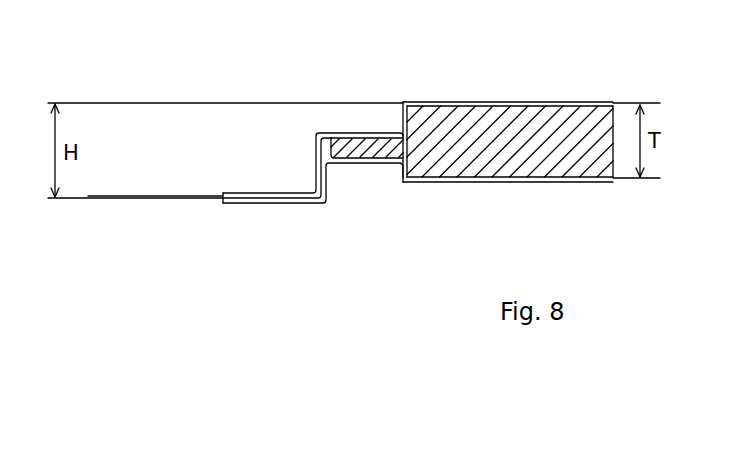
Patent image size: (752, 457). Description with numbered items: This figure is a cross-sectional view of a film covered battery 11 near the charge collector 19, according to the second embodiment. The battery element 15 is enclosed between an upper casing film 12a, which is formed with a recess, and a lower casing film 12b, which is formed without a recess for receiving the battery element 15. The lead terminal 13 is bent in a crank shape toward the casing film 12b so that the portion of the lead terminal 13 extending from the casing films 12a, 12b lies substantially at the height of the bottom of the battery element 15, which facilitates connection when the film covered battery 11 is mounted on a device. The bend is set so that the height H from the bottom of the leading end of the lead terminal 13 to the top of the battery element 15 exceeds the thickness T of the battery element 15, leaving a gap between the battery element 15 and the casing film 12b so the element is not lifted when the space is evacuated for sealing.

The film covered battery 11 is at (508, 136).
The casing film 12a is at (471, 103).
The casing film 12b is at (482, 182).
The lead terminal 13 is at (245, 167).
The battery element 15 is at (547, 160).
The charge collector 19 is at (361, 146).